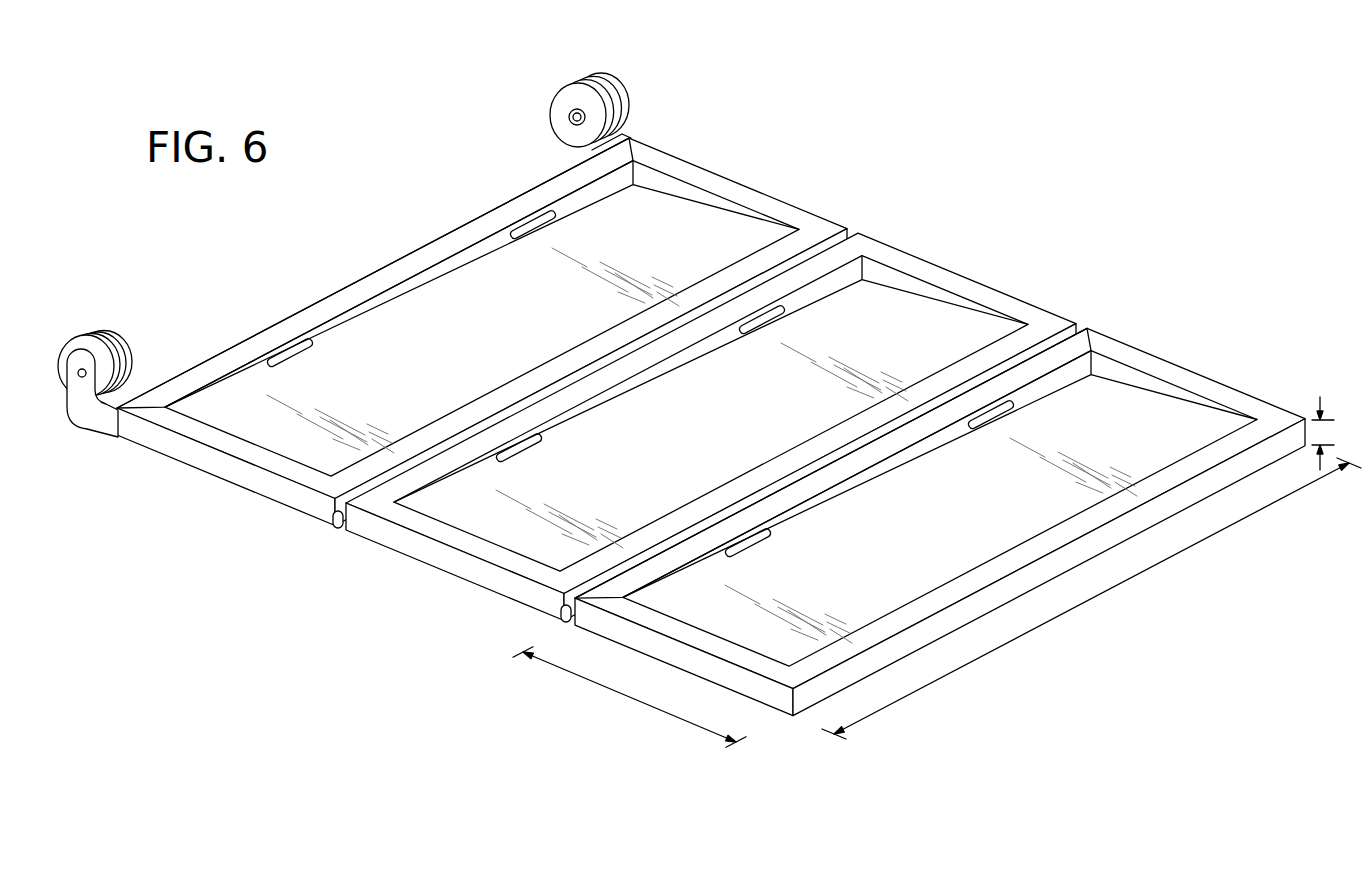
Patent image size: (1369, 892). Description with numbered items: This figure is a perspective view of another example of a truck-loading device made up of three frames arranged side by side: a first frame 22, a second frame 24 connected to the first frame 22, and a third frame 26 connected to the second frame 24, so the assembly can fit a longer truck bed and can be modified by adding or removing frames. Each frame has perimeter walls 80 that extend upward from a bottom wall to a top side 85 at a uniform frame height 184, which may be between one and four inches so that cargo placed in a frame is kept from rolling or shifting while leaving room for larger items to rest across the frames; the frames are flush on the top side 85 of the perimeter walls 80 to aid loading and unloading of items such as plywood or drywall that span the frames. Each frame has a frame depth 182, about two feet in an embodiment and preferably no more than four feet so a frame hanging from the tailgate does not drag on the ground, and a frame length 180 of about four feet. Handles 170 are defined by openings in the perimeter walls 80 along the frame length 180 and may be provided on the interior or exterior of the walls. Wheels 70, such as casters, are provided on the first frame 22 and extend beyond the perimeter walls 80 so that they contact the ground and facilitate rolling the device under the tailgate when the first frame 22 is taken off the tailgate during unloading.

The first frame 22 is at (735, 182).
The second frame 24 is at (970, 278).
The third frame 26 is at (1197, 374).
The wheels 70 is at (594, 73).
The perimeter walls 80 is at (394, 276).
The top side 85 is at (1133, 355).
The handles 170 is at (292, 351).
The frame length 180 is at (1118, 586).
The frame depth 182 is at (620, 694).
The frame height 184 is at (1323, 432).